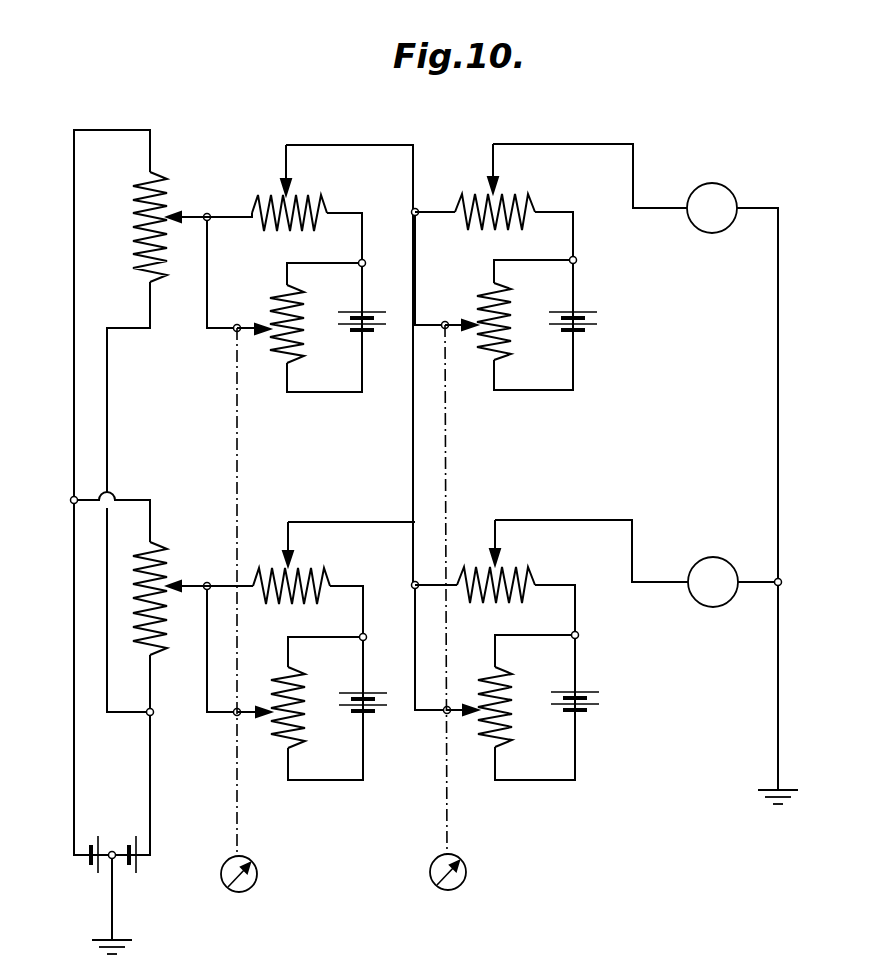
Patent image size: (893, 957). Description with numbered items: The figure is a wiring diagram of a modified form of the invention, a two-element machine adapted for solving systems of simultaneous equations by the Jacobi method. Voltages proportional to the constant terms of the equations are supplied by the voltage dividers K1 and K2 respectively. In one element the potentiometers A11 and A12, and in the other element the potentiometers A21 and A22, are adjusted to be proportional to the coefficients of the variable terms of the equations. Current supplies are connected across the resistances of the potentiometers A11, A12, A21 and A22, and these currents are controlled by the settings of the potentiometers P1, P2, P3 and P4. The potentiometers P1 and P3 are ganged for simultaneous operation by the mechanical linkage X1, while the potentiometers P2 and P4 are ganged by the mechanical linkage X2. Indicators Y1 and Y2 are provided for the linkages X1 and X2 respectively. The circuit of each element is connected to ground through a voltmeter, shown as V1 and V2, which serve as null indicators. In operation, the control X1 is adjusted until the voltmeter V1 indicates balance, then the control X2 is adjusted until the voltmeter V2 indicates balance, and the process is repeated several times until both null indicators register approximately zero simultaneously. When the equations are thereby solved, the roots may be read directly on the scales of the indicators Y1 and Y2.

The voltage divider K1 is at (134, 182).
The voltage divider K2 is at (136, 552).
The potentiometer A11 is at (262, 203).
The potentiometer A12 is at (466, 200).
The potentiometer A21 is at (264, 574).
The potentiometer A22 is at (468, 572).
The potentiometer P1 is at (290, 366).
The potentiometer P2 is at (498, 362).
The potentiometer P3 is at (292, 750).
The potentiometer P4 is at (500, 750).
The mechanical linkage X1 is at (238, 482).
The mechanical linkage X2 is at (447, 458).
The indicator Y1 is at (256, 866).
The indicator Y2 is at (465, 864).
The voltmeter V1 is at (712, 208).
The voltmeter V2 is at (713, 582).